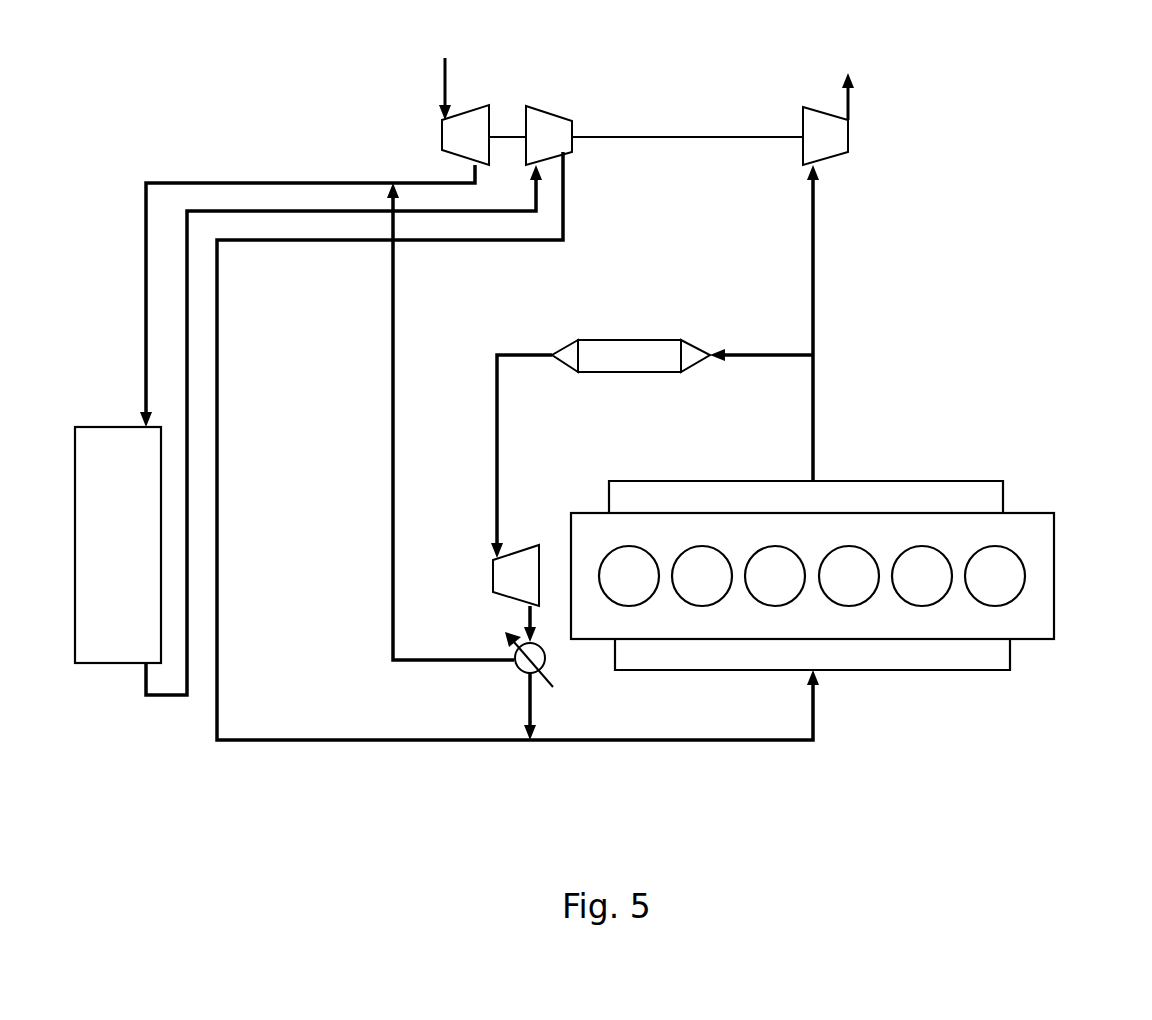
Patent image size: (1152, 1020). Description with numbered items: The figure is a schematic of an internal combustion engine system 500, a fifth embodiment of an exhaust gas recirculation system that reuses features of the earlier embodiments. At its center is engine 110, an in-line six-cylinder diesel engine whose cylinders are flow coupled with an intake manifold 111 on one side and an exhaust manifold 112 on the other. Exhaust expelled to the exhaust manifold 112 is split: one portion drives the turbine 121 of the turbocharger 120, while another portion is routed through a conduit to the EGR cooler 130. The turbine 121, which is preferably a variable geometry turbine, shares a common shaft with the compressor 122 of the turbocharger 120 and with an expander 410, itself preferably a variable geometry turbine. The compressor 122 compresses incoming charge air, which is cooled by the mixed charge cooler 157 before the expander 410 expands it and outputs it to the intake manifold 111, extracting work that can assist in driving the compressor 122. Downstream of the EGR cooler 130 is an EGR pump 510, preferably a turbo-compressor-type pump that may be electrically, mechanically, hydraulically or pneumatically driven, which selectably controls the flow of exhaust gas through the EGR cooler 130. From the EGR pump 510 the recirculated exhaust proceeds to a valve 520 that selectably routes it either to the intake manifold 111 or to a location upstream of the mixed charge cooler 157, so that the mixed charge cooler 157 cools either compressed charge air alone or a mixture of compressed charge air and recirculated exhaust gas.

The internal combustion engine system 500 is at (178, 92).
The engine 110 is at (1038, 573).
The intake manifold 111 is at (993, 655).
The exhaust manifold 112 is at (987, 495).
The turbocharger 120 is at (647, 118).
The turbine 121 is at (833, 138).
The compressor 122 is at (469, 128).
The EGR cooler 130 is at (632, 355).
The mixed charge cooler 157 is at (138, 503).
The expander 410 is at (549, 134).
The EGR pump 510 is at (513, 579).
The valve 520 is at (527, 667).